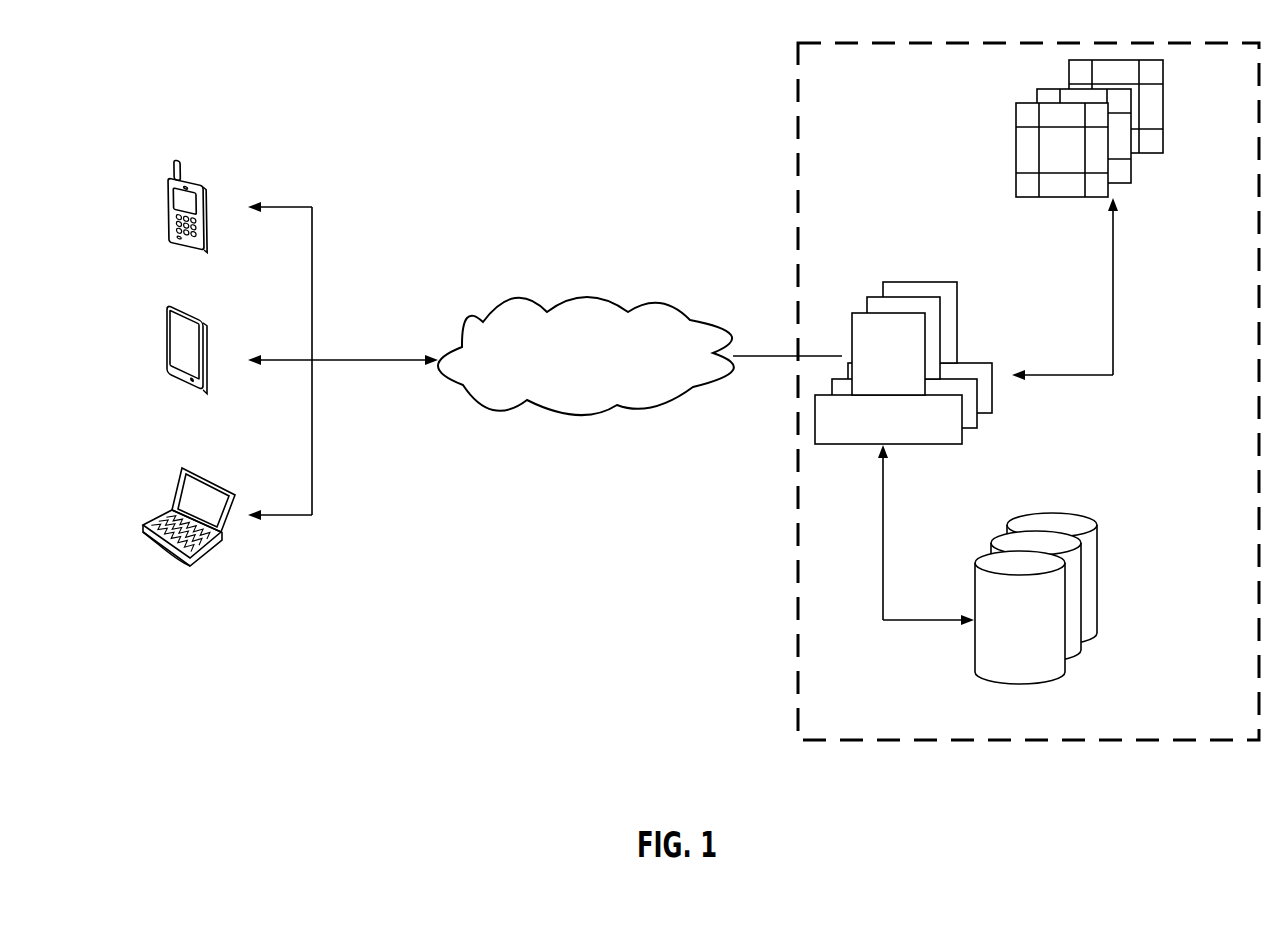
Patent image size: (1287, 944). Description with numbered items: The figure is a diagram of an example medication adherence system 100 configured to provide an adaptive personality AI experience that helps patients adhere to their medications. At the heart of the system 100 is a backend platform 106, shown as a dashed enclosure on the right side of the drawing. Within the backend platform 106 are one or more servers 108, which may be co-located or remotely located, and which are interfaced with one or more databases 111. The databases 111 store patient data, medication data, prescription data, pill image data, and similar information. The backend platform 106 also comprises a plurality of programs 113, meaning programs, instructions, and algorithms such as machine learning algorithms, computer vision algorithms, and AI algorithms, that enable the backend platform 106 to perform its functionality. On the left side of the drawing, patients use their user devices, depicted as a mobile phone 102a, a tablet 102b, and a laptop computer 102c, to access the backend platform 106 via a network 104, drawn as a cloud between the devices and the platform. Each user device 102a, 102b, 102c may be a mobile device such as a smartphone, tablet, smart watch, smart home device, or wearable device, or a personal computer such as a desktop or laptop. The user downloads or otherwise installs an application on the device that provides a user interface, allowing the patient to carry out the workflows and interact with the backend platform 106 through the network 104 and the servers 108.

The medication adherence system 100 is at (580, 74).
The user device 102a is at (202, 251).
The user device 102b is at (208, 391).
The user device 102c is at (207, 553).
The network 104 is at (622, 304).
The backend platform 106 is at (798, 102).
The servers 108 is at (912, 281).
The databases 111 is at (1080, 651).
The programs 113 is at (1169, 133).